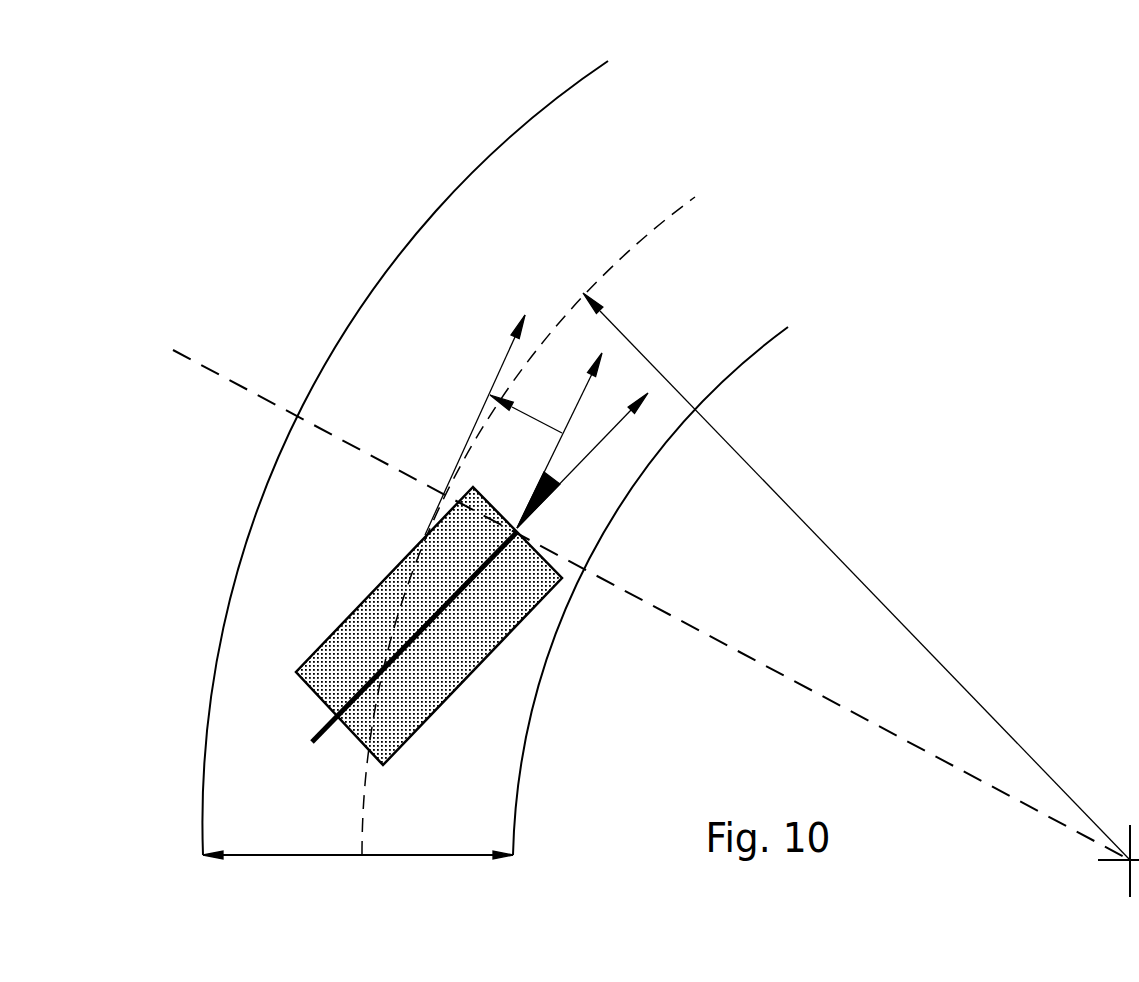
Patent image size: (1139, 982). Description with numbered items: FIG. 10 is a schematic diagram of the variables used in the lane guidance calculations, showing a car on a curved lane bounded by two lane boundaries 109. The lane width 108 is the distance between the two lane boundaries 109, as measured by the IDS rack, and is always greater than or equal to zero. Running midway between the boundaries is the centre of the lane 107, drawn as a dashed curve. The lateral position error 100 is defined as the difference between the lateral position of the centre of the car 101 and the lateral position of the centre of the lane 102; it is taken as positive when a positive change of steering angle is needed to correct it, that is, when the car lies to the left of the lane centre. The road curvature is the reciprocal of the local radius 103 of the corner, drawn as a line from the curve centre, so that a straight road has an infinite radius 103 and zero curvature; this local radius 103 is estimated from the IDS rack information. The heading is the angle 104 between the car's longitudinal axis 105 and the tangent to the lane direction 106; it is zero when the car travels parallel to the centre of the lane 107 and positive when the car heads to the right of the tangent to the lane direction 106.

The lateral position error 100 is at (526, 410).
The centre of the car 101 is at (548, 466).
The centre of the lane 102 is at (473, 420).
The local radius 103 is at (990, 713).
The heading angle 104 is at (562, 480).
The longitudinal axis of the car 105 is at (337, 720).
The tangent to the lane direction 106 is at (577, 405).
The centre of the lane 107 is at (635, 242).
The lane width 108 is at (455, 857).
The lane boundaries 109 is at (537, 113).